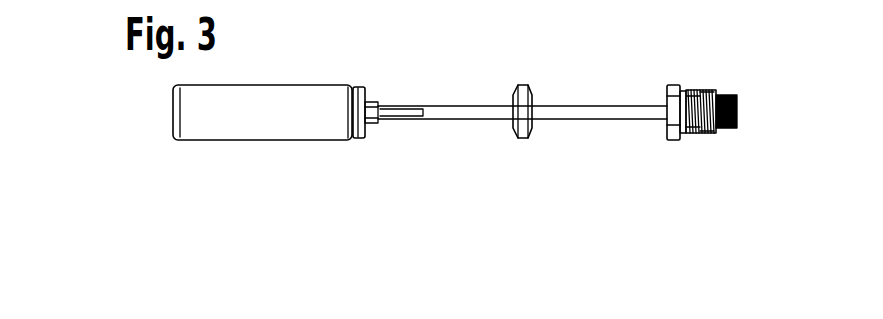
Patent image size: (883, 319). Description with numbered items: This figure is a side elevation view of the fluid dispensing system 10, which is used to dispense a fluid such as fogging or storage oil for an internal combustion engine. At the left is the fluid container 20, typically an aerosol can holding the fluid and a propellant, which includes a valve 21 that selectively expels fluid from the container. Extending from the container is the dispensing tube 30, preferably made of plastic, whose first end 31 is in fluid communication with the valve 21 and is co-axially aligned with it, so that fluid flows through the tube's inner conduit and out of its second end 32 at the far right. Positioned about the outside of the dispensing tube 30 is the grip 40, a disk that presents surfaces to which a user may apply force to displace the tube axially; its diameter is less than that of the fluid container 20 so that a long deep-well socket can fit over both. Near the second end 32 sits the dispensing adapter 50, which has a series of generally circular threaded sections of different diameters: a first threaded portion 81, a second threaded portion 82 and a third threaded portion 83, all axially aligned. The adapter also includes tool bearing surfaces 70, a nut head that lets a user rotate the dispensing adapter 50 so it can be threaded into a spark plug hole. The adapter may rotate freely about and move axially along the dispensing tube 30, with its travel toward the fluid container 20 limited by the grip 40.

The fluid dispensing system 10 is at (512, 78).
The fluid container 20 is at (326, 98).
The valve 21 is at (405, 108).
The dispensing tube 30 is at (567, 105).
The first end 31 is at (380, 123).
The second end 32 is at (740, 110).
The grip 40 is at (521, 138).
The dispensing adapter 50 is at (757, 108).
The tool bearing surfaces 70 is at (689, 92).
The first threaded portion 81 is at (726, 92).
The second threaded portion 82 is at (708, 90).
The third threaded portion 83 is at (690, 132).